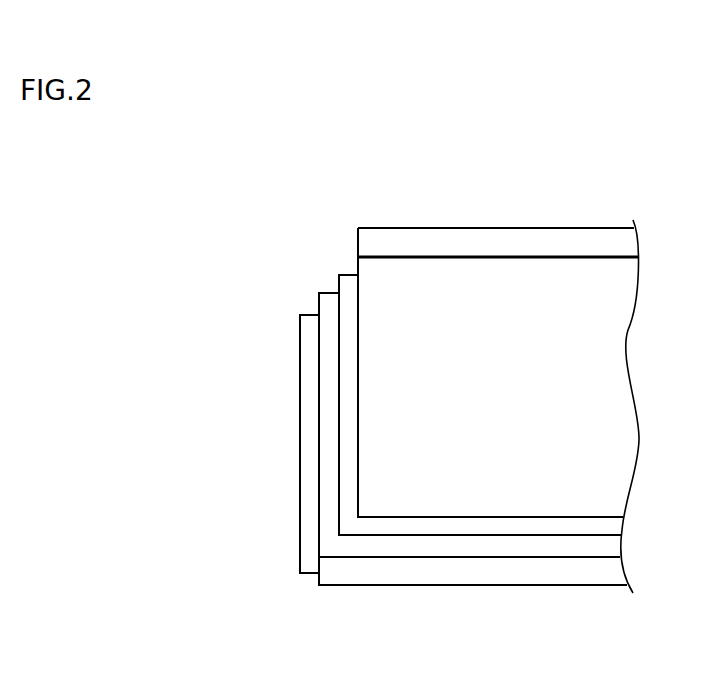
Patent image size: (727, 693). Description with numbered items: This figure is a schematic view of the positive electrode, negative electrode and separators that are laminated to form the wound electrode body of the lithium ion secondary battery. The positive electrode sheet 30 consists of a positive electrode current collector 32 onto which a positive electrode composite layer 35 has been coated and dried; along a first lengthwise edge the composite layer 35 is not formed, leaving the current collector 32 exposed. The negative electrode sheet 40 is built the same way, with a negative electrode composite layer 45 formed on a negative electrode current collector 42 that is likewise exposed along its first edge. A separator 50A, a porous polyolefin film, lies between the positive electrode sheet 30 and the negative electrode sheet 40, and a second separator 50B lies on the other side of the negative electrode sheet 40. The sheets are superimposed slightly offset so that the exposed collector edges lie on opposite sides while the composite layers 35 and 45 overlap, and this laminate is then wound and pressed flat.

The positive electrode sheet 30 is at (498, 322).
The positive electrode current collector 32 is at (602, 238).
The positive electrode composite layer 35 is at (405, 285).
The negative electrode sheet 40 is at (455, 423).
The negative electrode current collector 42 is at (393, 569).
The negative electrode composite layer 45 is at (548, 548).
The separator 50A is at (348, 274).
The separator 50B is at (308, 314).